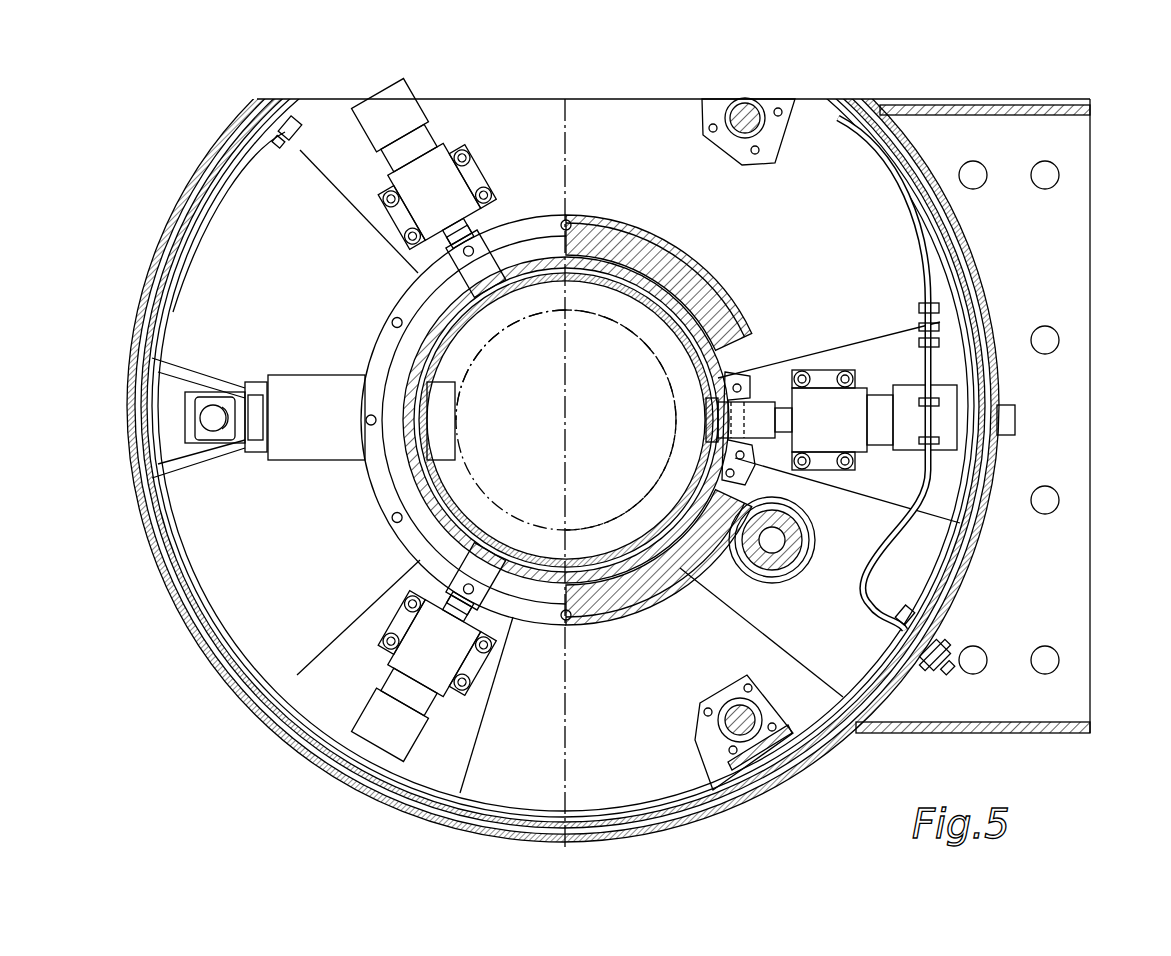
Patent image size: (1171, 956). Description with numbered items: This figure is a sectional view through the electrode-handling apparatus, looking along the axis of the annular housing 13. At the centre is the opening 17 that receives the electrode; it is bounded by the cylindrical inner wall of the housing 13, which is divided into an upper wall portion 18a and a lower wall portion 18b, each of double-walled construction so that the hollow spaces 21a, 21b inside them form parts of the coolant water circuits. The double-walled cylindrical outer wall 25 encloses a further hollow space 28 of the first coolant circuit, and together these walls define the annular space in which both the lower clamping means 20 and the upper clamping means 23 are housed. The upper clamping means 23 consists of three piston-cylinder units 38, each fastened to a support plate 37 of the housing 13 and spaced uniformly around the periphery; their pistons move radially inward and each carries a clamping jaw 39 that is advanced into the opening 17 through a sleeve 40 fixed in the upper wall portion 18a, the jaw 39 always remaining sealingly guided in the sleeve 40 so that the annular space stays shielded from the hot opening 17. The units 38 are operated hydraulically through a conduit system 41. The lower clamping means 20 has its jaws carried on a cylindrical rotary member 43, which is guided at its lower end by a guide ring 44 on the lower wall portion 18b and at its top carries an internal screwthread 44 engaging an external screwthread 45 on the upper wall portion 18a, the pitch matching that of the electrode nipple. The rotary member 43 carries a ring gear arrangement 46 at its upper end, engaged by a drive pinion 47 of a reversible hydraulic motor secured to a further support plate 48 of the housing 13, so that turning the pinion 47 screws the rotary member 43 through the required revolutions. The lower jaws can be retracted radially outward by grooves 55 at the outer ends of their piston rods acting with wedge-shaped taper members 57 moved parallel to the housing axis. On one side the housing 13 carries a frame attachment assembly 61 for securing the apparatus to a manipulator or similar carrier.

The housing 13 is at (172, 622).
The opening 17 is at (606, 452).
The upper wall portion 18a is at (637, 300).
The lower wall portion 18b is at (457, 340).
The lower clamping means 20 is at (317, 465).
The hollow space 21a is at (637, 550).
The hollow space 21b is at (447, 510).
The upper clamping means 23 is at (365, 182).
The cylindrical outer wall 25 is at (770, 793).
The hollow space 28 is at (165, 240).
The support plate 37 is at (478, 152).
The piston-cylinder unit 38 is at (462, 186).
The clamping jaw 39 is at (763, 430).
The sleeve 40 is at (713, 417).
The conduit system 41 is at (882, 175).
The rotary member 43 is at (687, 290).
The guide ring / internal screwthread 44 is at (690, 345).
The external screwthread 45 is at (593, 257).
The ring gear arrangement 46 is at (650, 238).
The drive pinion 47 is at (797, 557).
The support plate 48 is at (770, 603).
The groove 55 is at (210, 407).
The taper member 57 is at (752, 122).
The frame attachment assembly 61 is at (1068, 238).